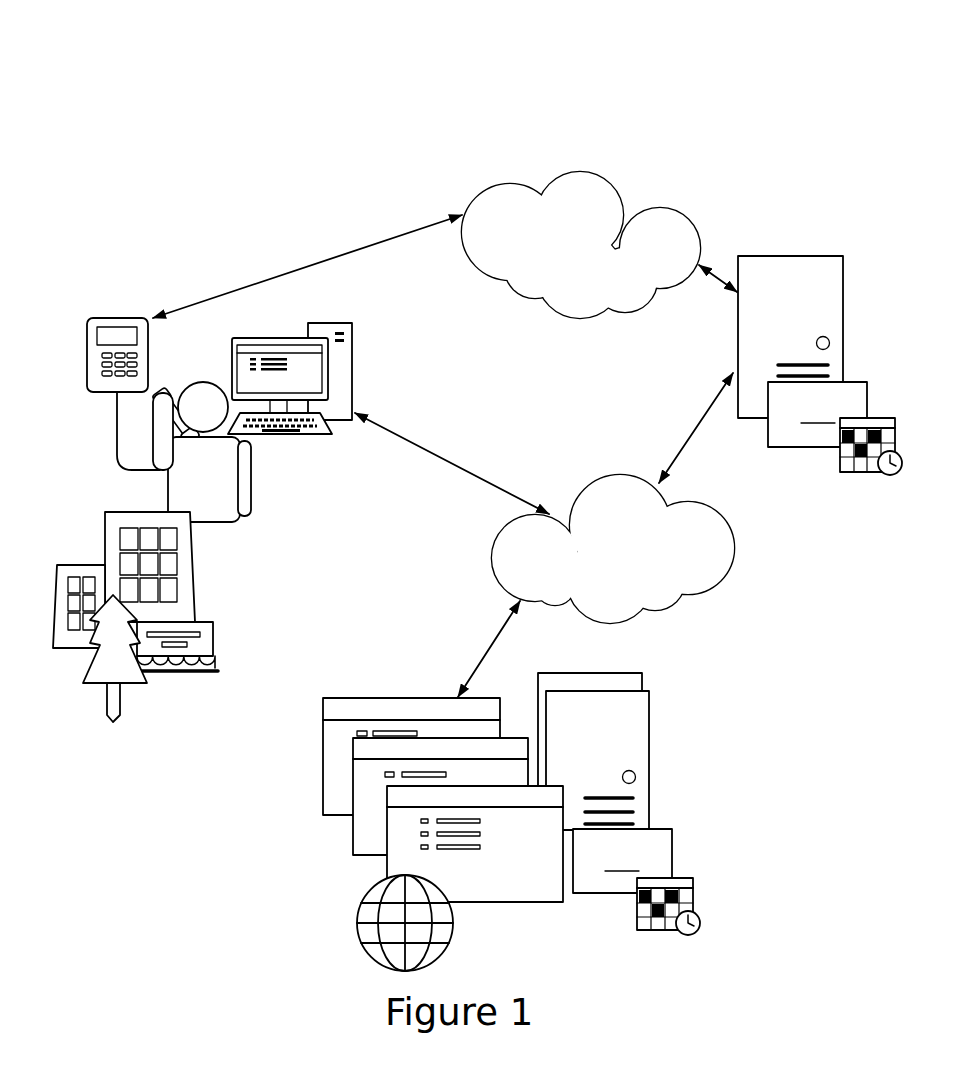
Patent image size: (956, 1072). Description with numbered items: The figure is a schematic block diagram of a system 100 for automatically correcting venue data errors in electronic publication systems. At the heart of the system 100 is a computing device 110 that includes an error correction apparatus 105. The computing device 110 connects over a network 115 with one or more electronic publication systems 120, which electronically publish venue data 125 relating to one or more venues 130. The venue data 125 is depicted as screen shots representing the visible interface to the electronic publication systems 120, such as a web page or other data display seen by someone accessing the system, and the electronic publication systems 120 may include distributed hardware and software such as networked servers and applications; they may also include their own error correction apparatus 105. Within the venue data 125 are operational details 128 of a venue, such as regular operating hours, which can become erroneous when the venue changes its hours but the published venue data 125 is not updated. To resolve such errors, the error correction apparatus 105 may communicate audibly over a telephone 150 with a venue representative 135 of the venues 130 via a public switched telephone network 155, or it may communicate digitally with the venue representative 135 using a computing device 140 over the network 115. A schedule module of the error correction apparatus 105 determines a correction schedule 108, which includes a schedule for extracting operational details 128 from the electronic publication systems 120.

The system 100 is at (694, 86).
The error correction apparatus 105 is at (720, 637).
The correction schedule 108 is at (842, 468).
The computing device 110 is at (791, 257).
The network 115 is at (598, 478).
The electronic publication system 120 is at (665, 738).
The venue data 125 is at (385, 838).
The operational detail 128 is at (282, 366).
The venue 130 is at (207, 622).
The venue representative 135 is at (203, 480).
The computing device 140 is at (408, 630).
The telephone 150 is at (120, 318).
The public switched telephone network 155 is at (522, 187).